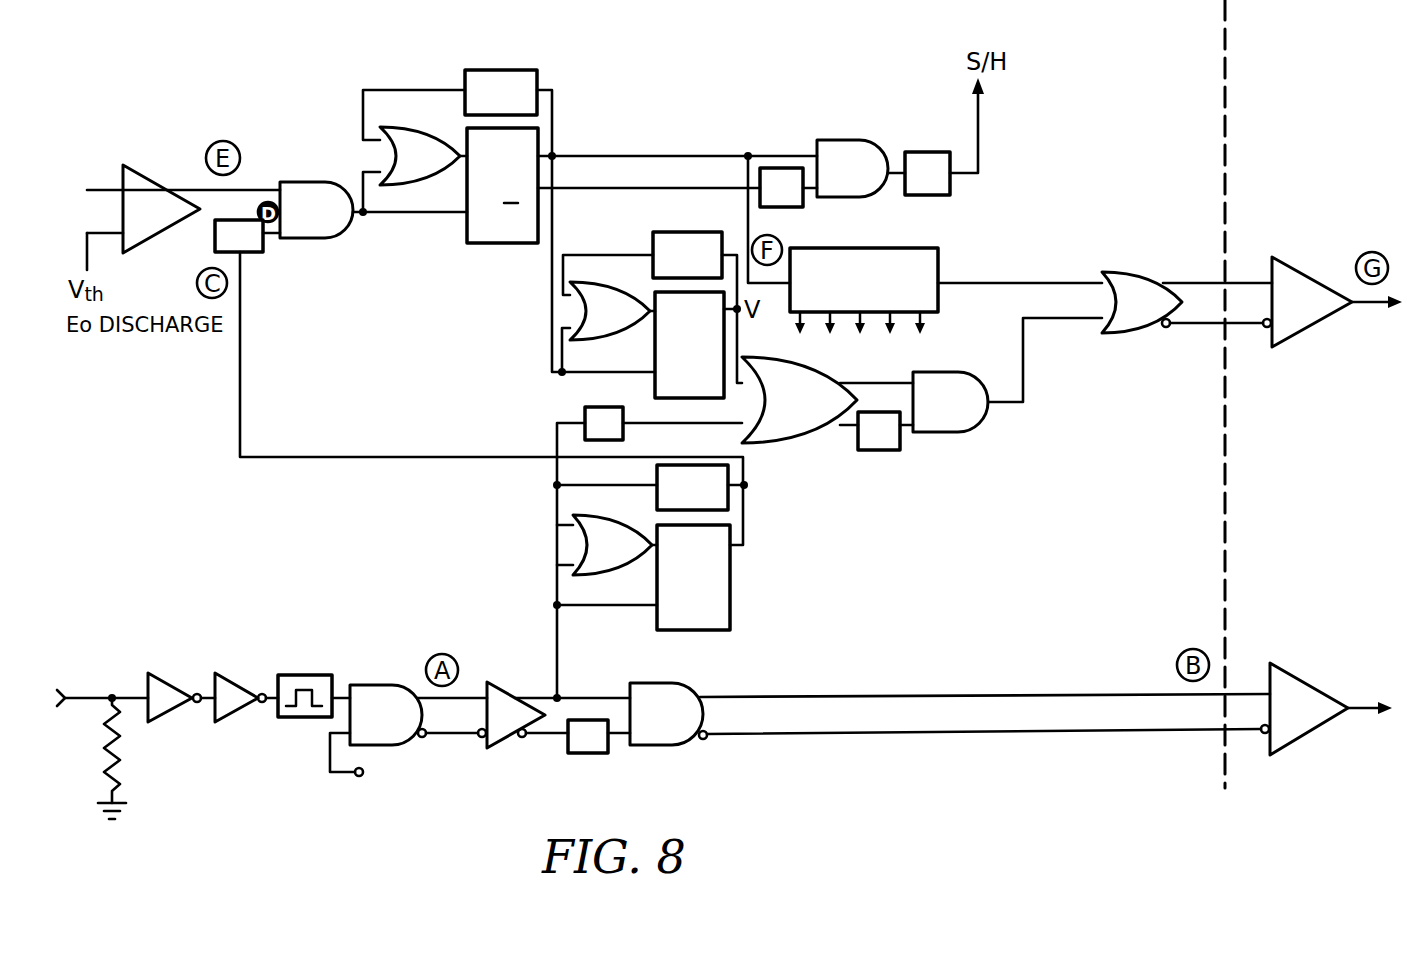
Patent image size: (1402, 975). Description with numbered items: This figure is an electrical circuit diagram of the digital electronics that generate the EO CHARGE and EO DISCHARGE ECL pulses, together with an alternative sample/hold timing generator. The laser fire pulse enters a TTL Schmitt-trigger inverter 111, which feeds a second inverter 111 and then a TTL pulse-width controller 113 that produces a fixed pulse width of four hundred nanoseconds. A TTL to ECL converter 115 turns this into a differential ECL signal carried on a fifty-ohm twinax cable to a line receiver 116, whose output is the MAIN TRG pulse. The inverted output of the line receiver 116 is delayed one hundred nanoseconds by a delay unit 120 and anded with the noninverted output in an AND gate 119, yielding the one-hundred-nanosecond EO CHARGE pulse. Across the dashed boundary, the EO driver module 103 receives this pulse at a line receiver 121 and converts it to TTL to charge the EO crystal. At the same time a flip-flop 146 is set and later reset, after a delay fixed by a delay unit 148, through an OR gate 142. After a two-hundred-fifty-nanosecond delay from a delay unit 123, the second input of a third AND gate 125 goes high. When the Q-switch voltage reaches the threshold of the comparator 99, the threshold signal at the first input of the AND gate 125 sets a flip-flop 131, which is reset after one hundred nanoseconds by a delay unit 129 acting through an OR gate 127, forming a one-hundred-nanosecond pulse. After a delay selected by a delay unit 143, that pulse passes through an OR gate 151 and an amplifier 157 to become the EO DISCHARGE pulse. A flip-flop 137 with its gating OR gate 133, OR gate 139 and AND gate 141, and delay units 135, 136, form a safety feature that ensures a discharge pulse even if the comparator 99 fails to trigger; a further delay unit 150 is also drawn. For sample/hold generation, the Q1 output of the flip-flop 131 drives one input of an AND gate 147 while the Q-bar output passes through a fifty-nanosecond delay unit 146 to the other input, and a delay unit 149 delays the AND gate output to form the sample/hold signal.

The comparator 99 is at (143, 176).
The EO driver module 103 is at (1262, 394).
The TTL Schmitt-trigger inverter 111 is at (222, 673).
The TTL pulse-width controller 113 is at (305, 675).
The TTL to ECL converter 115 is at (372, 685).
The line receiver 116 is at (500, 682).
The AND gate 119 is at (683, 683).
The delay unit 120 is at (590, 754).
The line receiver 121 is at (1310, 690).
The delay unit 123 is at (262, 255).
The third AND gate 125 is at (316, 192).
The OR gate 127 is at (411, 129).
The delay unit 129 is at (495, 71).
The flip-flop 131 is at (485, 244).
The OR gate 133 is at (607, 282).
The delay unit 135 is at (688, 233).
The delay unit 136 is at (880, 451).
The flip-flop 137 is at (725, 345).
The OR gate 139 is at (797, 445).
The AND gate 141 is at (960, 432).
The OR gate 142 is at (572, 545).
The delay unit 143 is at (834, 251).
The flip-flop / fifty-nanosecond delay unit 146 is at (779, 168).
The AND gate 147 is at (845, 140).
The delay unit 148 is at (683, 466).
The delay unit 149 is at (925, 196).
The delay element 150 is at (586, 407).
The OR gate 151 is at (1130, 272).
The amplifier 157 is at (1318, 275).